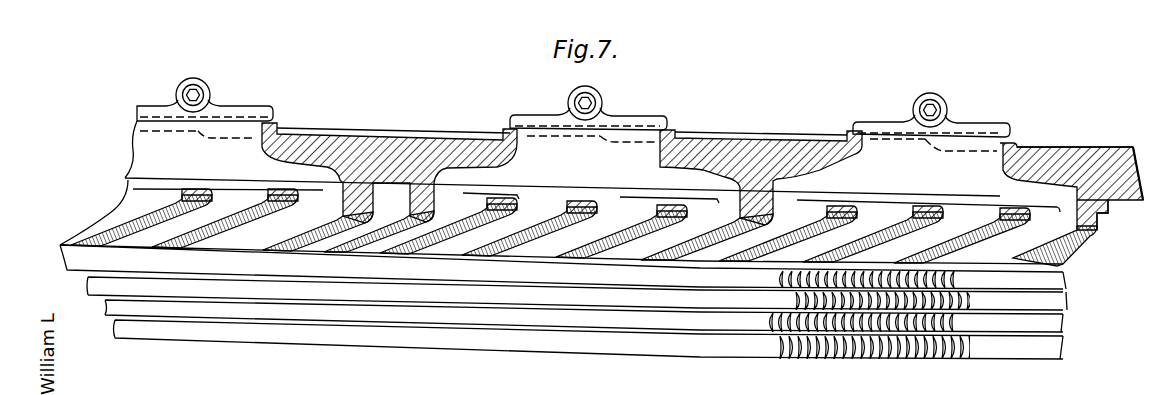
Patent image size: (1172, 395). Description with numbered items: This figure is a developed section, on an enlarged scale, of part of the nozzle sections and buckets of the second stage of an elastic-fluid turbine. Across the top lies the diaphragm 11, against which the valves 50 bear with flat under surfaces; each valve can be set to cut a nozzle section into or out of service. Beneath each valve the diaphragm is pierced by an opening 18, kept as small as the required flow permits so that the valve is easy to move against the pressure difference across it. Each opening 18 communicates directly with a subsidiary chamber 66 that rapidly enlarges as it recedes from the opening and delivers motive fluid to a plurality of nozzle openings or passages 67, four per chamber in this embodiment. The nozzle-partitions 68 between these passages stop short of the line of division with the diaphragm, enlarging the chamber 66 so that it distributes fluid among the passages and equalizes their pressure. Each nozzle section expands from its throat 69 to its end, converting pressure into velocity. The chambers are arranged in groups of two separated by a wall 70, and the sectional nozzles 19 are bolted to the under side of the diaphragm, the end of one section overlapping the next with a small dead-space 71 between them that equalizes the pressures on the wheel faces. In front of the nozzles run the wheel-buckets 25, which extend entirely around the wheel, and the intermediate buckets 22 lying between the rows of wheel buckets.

The diaphragm 11 is at (1138, 168).
The openings 18 is at (247, 142).
The nozzles 19 is at (1073, 233).
The intermediate buckets 22 is at (797, 298).
The wheel-buckets 25 is at (777, 274).
The valves 50 is at (241, 116).
The subsidiary chambers 66 is at (560, 183).
The nozzle openings or passages 67 is at (550, 229).
The nozzle-partitions 68 is at (850, 203).
The throat 69 is at (1030, 232).
The wall 70 is at (562, 122).
The dead-space 71 is at (383, 197).